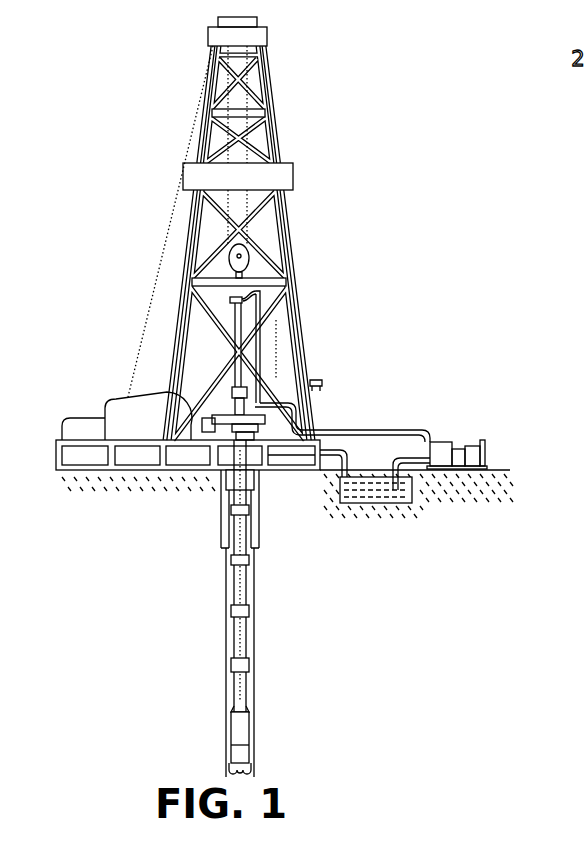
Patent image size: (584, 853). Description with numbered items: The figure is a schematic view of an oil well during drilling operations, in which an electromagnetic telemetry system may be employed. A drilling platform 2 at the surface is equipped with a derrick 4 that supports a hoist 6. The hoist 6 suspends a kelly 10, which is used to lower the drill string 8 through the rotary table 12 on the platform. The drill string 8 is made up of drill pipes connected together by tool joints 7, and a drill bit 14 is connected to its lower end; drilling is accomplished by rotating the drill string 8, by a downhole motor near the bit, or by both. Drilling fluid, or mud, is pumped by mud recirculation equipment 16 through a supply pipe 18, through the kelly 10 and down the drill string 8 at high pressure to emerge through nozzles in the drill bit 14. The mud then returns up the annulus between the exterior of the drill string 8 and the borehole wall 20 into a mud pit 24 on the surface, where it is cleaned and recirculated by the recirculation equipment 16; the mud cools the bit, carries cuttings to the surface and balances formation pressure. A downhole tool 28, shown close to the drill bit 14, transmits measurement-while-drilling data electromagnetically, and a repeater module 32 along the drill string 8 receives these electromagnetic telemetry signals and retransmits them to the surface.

The drilling platform 2 is at (56, 445).
The derrick 4 is at (278, 133).
The hoist 6 is at (250, 247).
The tool joint 7 is at (232, 557).
The drill string 8 is at (249, 607).
The kelly 10 is at (229, 243).
The rotary table 12 is at (255, 413).
The drill bit 14 is at (325, 772).
The mud recirculation equipment 16 is at (517, 450).
The supply pipe 18 is at (463, 435).
The borehole wall 20 is at (335, 602).
The mud pit 24 is at (432, 497).
The downhole tool 28 is at (315, 730).
The repeater module 32 is at (232, 611).